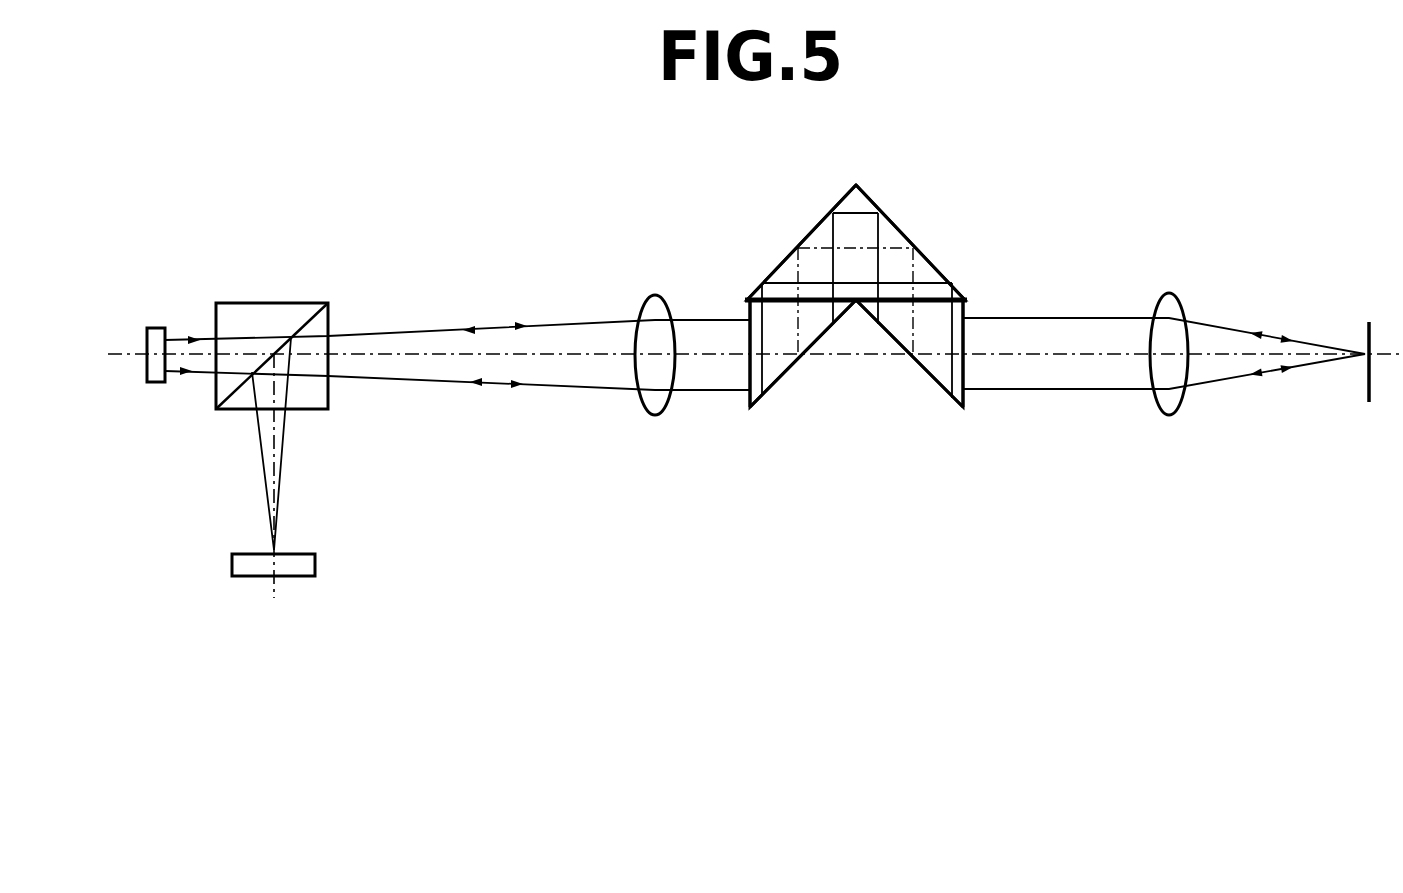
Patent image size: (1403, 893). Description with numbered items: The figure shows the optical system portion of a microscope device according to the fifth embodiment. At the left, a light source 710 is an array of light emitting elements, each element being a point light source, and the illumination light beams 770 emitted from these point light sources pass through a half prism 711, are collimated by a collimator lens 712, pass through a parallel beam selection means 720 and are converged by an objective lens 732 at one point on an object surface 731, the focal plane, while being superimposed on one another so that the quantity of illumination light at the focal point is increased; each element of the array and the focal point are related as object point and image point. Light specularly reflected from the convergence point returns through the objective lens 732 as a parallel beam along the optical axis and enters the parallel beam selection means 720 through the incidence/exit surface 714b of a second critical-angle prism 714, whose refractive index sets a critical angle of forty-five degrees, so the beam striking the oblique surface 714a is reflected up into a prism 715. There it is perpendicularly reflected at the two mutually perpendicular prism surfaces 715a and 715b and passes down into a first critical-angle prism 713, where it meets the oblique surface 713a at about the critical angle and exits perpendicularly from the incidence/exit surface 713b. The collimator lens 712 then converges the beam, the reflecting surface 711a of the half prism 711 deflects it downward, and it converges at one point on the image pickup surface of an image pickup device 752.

The light source 710 is at (155, 325).
The illumination light beams 770 is at (184, 374).
The half prism 711 is at (240, 302).
The reflecting surface 711a is at (313, 303).
The image pickup device 752 is at (315, 565).
The collimator lens 712 is at (645, 302).
The parallel beam selection means 720 is at (870, 307).
The prism 715 is at (860, 197).
The prism surface 715a is at (933, 264).
The prism surface 715b is at (818, 227).
The first critical-angle prism 713 is at (778, 382).
The oblique surface 713a is at (792, 367).
The incidence/exit surface 713b is at (740, 385).
The second critical-angle prism 714 is at (933, 385).
The oblique surface 714a is at (885, 335).
The incidence/exit surface 714b is at (965, 382).
The objective lens 732 is at (1180, 295).
The object surface (focal plane) 731 is at (1369, 320).